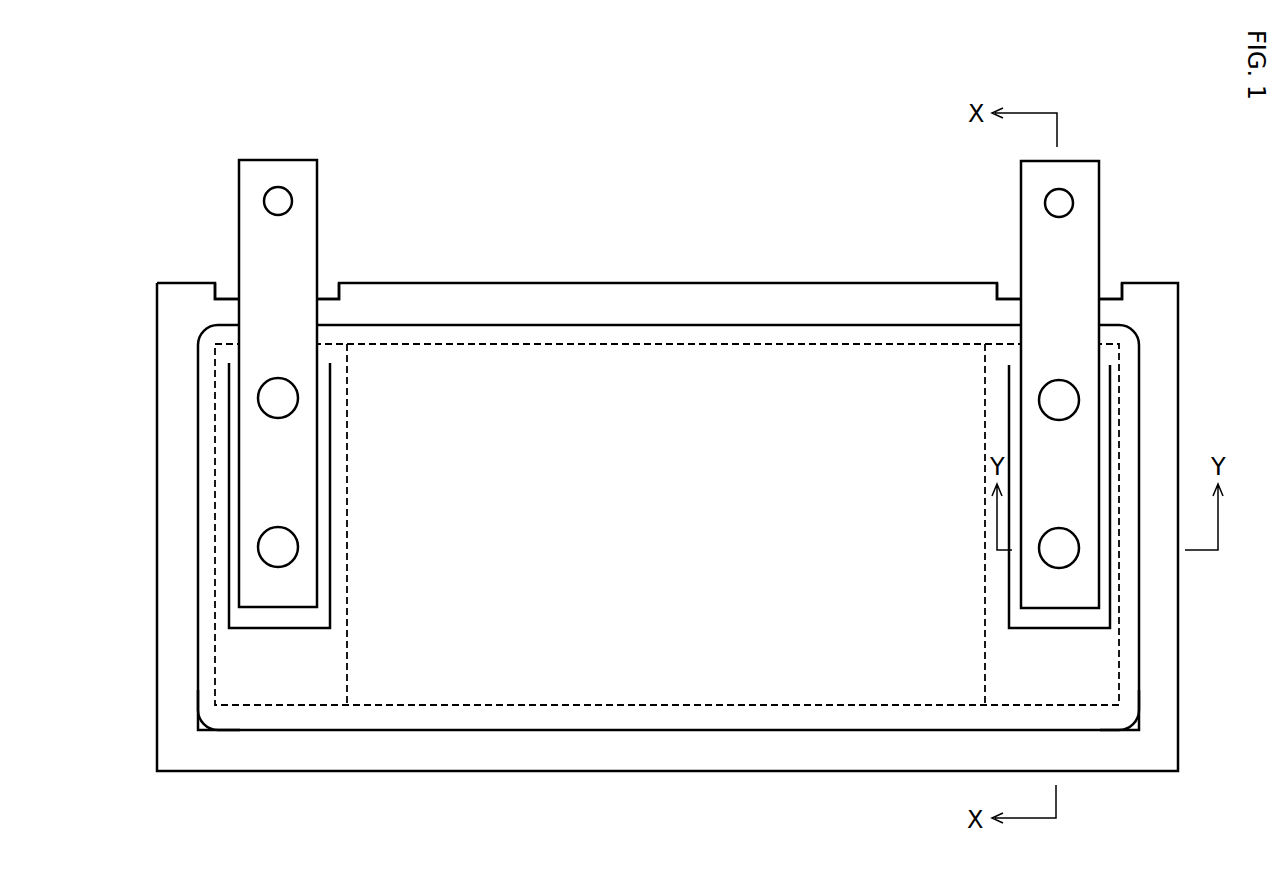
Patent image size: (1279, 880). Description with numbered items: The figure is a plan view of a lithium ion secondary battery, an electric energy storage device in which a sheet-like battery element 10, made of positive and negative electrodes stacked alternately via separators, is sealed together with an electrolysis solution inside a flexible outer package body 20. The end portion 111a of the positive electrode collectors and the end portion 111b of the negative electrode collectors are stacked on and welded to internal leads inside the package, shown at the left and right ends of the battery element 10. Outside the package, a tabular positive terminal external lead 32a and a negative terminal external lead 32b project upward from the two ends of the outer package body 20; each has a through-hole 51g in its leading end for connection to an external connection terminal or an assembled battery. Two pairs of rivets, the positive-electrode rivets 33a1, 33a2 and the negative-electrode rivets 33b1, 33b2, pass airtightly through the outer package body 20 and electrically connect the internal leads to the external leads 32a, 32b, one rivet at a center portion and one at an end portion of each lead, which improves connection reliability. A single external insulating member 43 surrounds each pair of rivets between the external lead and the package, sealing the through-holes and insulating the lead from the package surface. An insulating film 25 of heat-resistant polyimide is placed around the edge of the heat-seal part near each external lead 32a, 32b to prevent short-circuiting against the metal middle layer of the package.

The battery element 10 is at (702, 418).
The outer package body 20 is at (552, 300).
The insulating film 25 is at (327, 287).
The positive terminal external lead 32a is at (1070, 255).
The negative terminal external lead 32b is at (253, 253).
The positive-electrode rivet 33a1 is at (1040, 553).
The positive-electrode rivet 33a2 is at (1039, 400).
The negative-electrode rivet 33b1 is at (298, 547).
The negative-electrode rivet 33b2 is at (298, 398).
The external insulating member 43 is at (305, 615).
The through-hole 51g is at (290, 200).
The end portion of positive electrode collectors 111a is at (1087, 690).
The end portion of negative electrode collectors 111b is at (279, 687).